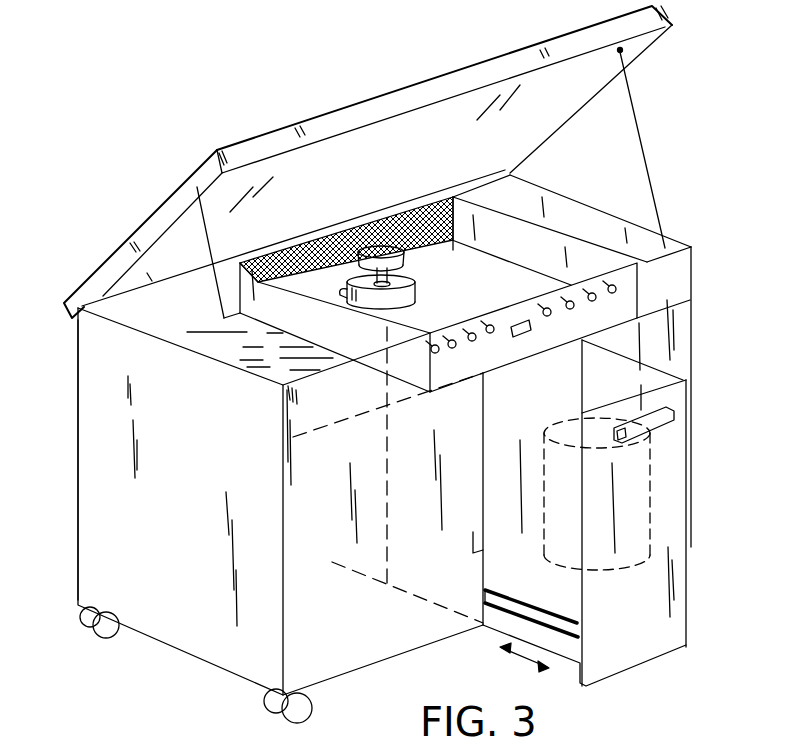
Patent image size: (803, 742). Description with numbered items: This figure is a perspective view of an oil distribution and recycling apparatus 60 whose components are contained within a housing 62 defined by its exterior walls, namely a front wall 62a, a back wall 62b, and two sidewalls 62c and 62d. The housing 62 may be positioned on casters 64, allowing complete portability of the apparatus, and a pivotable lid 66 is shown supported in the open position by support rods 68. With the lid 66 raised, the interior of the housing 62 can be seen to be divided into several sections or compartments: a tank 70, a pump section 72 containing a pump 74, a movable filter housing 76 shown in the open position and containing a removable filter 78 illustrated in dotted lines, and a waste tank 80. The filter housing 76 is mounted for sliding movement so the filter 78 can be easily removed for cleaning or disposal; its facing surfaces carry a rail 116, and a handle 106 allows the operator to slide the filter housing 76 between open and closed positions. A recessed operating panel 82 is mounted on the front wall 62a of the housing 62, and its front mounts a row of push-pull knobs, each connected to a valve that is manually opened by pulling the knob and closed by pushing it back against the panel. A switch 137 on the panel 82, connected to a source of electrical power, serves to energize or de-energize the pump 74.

The oil distribution and recycling apparatus 60 is at (683, 230).
The housing 62 is at (90, 520).
The front wall 62a is at (372, 653).
The back wall 62b is at (78, 432).
The sidewall 62c is at (125, 375).
The sidewall 62d is at (693, 332).
The casters 64 is at (82, 631).
The pivotable lid 66 is at (186, 182).
The support rods 68 is at (198, 218).
The tank 70 is at (258, 327).
The pump section 72 is at (422, 283).
The pump 74 is at (370, 245).
The movable filter housing 76 is at (673, 600).
The removable filter 78 is at (650, 494).
The waste tank 80 is at (563, 223).
The recessed operating panel 82 is at (605, 301).
The handle 106 is at (673, 422).
The rail 116 is at (481, 624).
The switch 137 is at (520, 336).